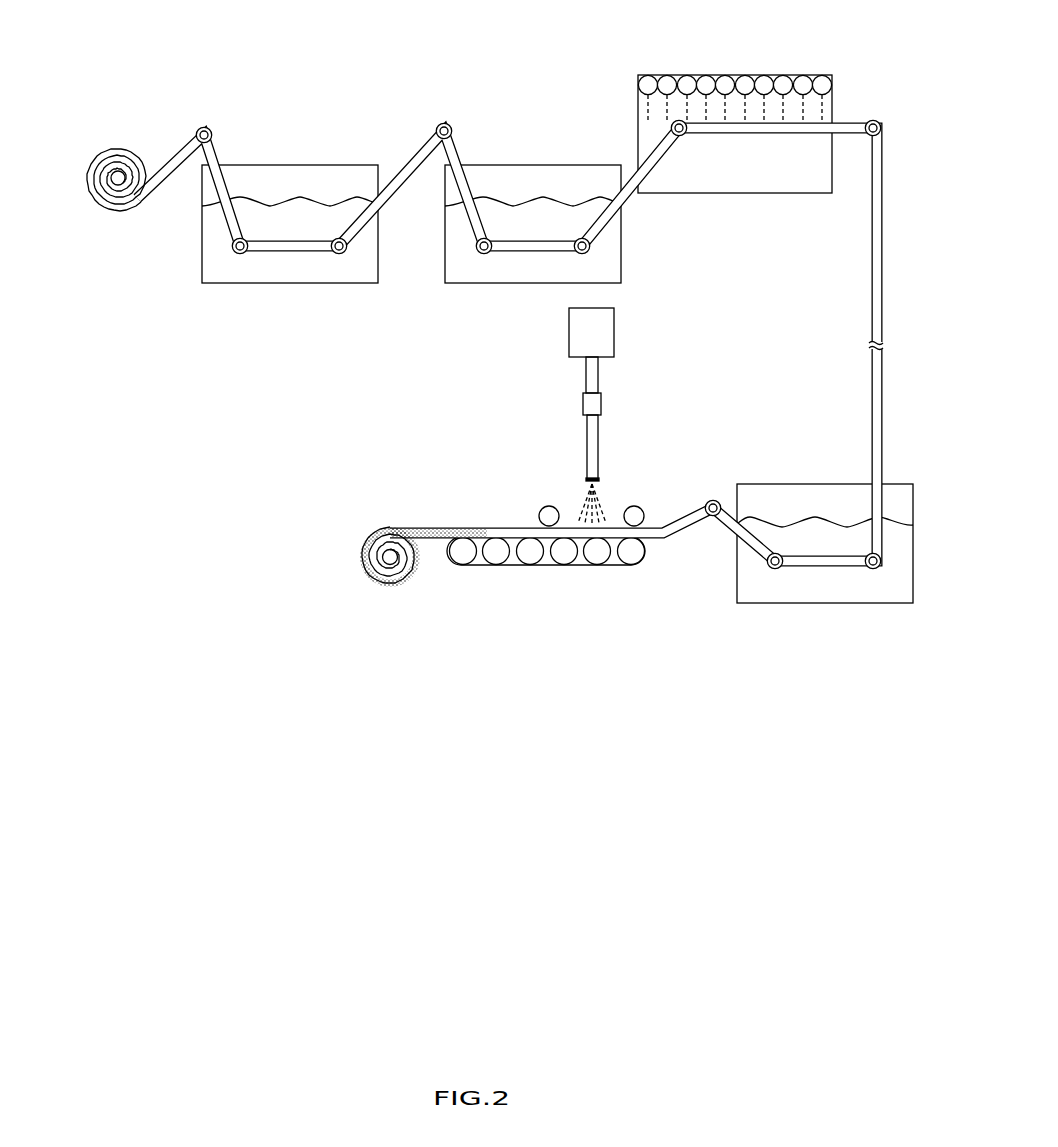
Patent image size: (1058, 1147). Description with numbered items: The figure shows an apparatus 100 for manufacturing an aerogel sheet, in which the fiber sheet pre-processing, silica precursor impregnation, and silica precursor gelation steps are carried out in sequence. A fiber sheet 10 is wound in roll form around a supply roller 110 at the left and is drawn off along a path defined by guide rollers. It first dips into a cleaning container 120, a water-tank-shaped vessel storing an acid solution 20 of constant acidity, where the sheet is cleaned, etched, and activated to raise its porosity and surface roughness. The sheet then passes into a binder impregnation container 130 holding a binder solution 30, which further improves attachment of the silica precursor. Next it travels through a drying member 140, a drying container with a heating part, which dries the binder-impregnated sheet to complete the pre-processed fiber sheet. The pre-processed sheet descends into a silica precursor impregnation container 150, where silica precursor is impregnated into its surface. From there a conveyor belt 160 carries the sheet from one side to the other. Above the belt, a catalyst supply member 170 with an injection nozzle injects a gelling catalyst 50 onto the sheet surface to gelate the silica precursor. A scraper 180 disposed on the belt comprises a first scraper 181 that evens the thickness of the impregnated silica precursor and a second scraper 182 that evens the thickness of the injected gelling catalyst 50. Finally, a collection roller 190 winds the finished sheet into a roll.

The apparatus for manufacturing an aerogel sheet 100 is at (489, 76).
The fiber sheet 10 is at (221, 144).
The acid solution 20 is at (286, 274).
The binder solution 30 is at (479, 274).
The gelling catalyst 50 is at (604, 510).
The supply roller 110 is at (118, 171).
The cleaning container 120 is at (290, 218).
The binder impregnation container 130 is at (531, 165).
The drying member 140 is at (733, 75).
The silica precursor impregnation container 150 is at (804, 484).
The conveyor belt 160 is at (545, 566).
The catalyst supply member 170 is at (614, 330).
The scraper 180 is at (605, 460).
The first scraper 181 is at (556, 507).
The second scraper 182 is at (641, 506).
The collection roller 190 is at (390, 552).